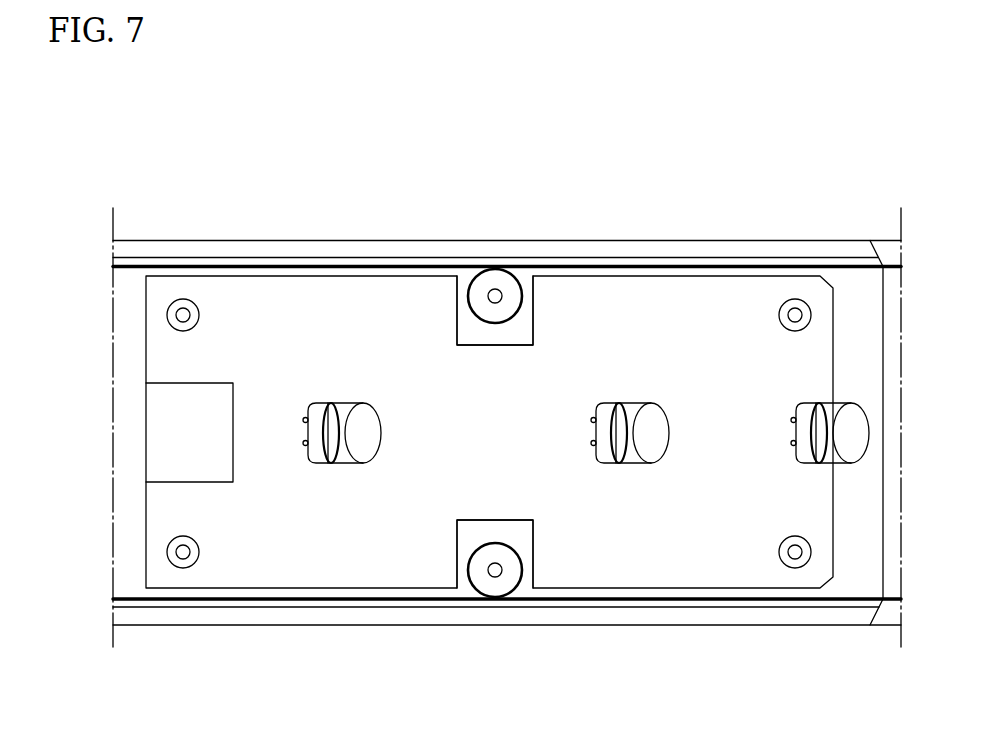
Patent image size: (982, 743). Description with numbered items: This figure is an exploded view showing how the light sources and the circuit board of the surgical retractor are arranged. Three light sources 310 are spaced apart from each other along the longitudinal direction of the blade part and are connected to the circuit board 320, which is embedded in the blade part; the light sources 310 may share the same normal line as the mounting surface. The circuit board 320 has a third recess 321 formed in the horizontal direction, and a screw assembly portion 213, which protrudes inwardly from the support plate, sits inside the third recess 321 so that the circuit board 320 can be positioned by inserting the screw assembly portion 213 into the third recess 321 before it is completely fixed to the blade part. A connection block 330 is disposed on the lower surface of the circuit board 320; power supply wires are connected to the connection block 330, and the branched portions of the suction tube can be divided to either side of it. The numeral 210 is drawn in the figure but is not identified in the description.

The housing / mounting bracket 210 is at (522, 337).
The screw assembly portion 213 is at (480, 297).
The light source 310 is at (361, 437).
The circuit board 320 is at (335, 307).
The third recess 321 is at (488, 520).
The connection block 330 is at (178, 424).